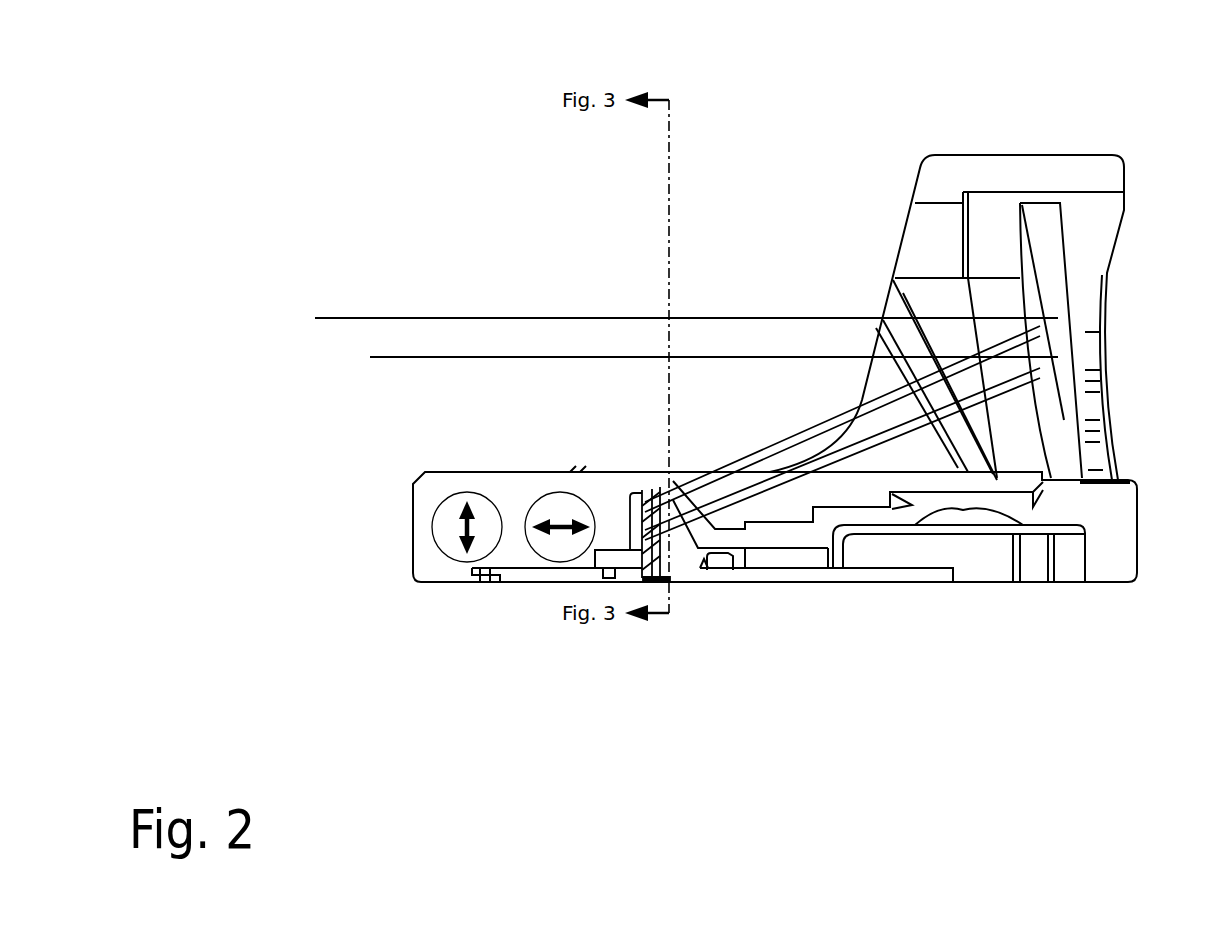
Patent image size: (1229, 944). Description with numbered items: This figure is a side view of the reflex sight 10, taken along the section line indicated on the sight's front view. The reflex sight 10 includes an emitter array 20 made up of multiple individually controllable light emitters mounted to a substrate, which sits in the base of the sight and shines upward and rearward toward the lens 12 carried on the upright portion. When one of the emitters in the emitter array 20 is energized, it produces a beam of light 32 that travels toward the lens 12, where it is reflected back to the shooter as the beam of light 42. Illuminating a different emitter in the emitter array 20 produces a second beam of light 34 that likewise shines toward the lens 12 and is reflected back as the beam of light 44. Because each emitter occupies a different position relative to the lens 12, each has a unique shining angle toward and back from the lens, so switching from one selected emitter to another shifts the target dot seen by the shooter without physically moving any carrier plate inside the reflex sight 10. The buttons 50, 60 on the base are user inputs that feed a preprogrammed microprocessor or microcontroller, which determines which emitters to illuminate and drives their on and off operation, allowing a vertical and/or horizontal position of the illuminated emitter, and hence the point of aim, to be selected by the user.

The reflex sight 10 is at (925, 172).
The lens 12 is at (1062, 270).
The emitter array 20 is at (657, 487).
The beam of light 32 is at (765, 482).
The beam of light 34 is at (792, 436).
The beam of light 42 is at (535, 357).
The beam of light 44 is at (595, 318).
The button 50 is at (448, 510).
The button 60 is at (545, 510).